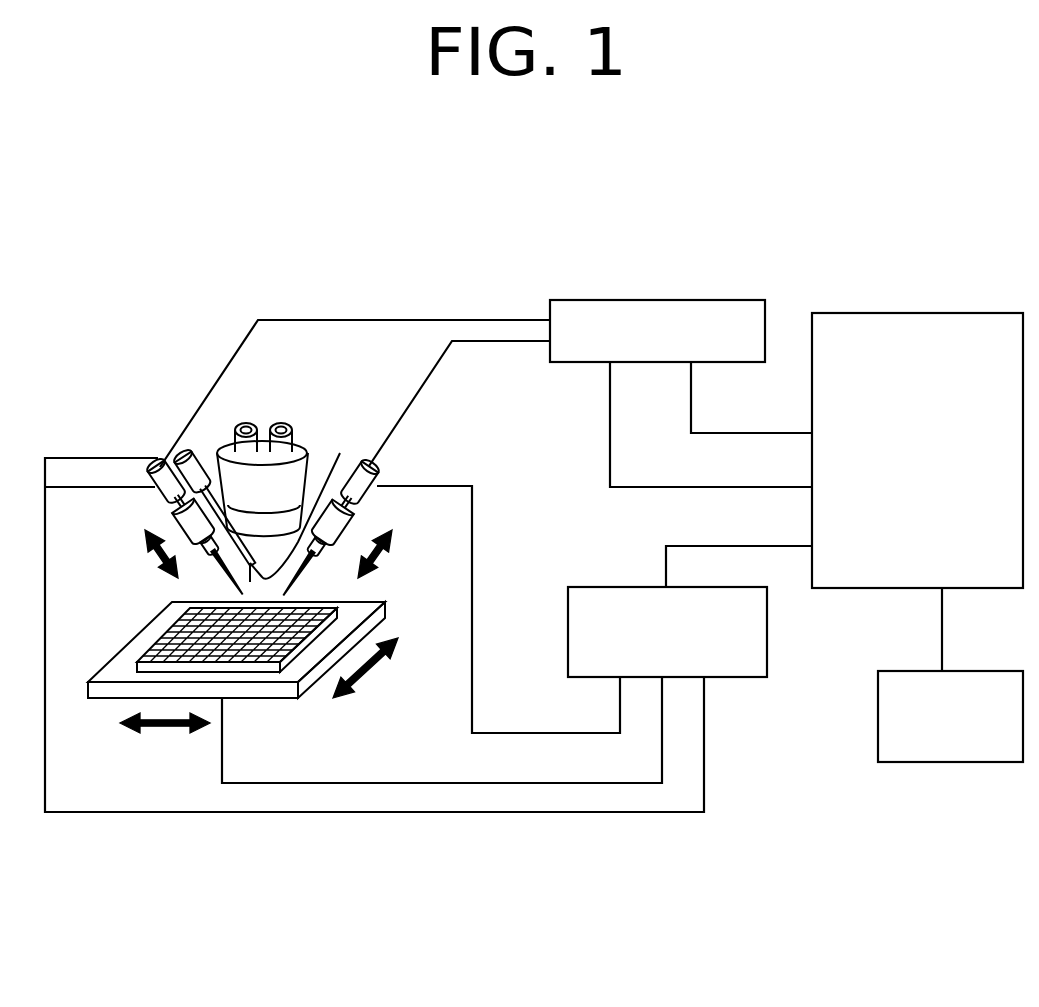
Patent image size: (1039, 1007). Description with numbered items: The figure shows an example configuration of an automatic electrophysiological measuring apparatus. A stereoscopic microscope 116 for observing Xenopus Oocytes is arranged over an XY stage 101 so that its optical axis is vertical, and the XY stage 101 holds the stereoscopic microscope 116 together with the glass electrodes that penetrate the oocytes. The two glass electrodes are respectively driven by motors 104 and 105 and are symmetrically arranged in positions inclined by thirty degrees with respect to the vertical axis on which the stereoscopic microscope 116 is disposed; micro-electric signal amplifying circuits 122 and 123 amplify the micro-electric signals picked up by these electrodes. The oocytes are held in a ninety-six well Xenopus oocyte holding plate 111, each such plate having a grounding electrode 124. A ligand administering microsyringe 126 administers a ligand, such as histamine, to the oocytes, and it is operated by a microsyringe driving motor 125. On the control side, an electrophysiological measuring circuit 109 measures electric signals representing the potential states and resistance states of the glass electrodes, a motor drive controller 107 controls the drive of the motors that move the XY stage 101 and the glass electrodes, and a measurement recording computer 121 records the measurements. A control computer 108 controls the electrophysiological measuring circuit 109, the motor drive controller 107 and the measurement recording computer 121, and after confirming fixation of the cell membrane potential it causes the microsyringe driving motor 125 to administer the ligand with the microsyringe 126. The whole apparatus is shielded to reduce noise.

The XY stage 101 is at (223, 682).
The motor 104 is at (388, 514).
The motor 105 is at (137, 469).
The motor drive controller 107 is at (733, 677).
The control computer 108 is at (942, 312).
The electrophysiological measuring circuit 109 is at (682, 314).
The 96 well Xenopus oocyte holding plate 111 is at (310, 621).
The stereoscopic microscope 116 is at (312, 467).
The measurement recording computer 121 is at (953, 762).
The micro-electric signal amplifying circuit 122 is at (180, 520).
The micro-electric signal amplifying circuit 123 is at (347, 525).
The grounding electrode 124 is at (167, 645).
The microsyringe driving motor 125 is at (178, 457).
The ligand administering microsyringe 126 is at (309, 500).